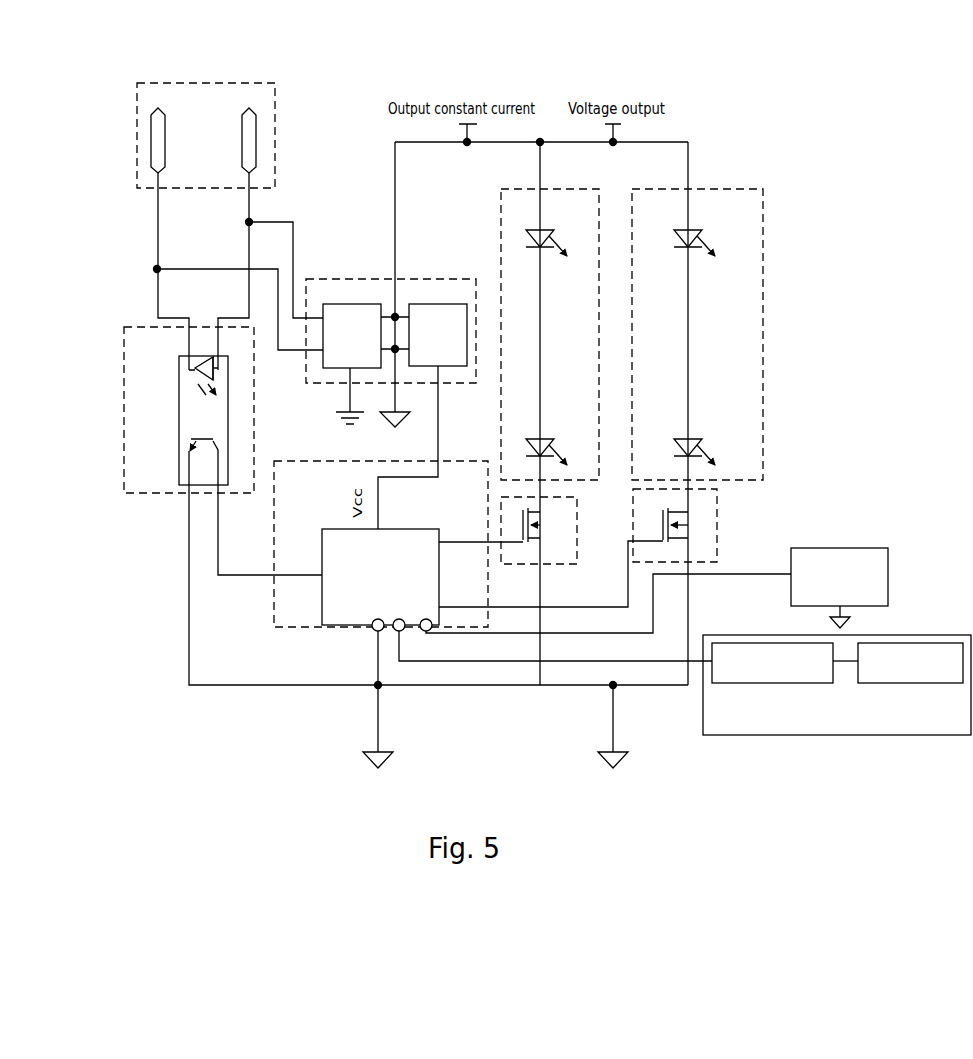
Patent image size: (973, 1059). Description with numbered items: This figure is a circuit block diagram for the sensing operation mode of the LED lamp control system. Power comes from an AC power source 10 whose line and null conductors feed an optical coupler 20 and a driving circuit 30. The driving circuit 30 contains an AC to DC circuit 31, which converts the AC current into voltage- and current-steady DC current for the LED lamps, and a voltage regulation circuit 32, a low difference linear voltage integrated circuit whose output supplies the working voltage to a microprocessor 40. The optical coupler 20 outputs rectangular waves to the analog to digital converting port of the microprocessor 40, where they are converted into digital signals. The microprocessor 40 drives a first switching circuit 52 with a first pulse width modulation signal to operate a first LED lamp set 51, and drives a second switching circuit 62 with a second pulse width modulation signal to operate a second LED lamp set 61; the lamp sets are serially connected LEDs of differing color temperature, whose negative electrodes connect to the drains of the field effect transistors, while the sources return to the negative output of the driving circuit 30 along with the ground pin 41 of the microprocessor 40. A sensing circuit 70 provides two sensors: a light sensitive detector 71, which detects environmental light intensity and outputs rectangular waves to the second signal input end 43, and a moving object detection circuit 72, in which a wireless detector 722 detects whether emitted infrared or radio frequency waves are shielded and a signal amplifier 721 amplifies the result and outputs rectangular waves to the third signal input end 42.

The power source 10 is at (208, 83).
The optical coupler 20 is at (391, 506).
The driving circuit 30 is at (391, 335).
The AC to DC circuit 31 is at (352, 364).
The voltage regulation (LDO) circuit 32 is at (422, 416).
The microprocessor 40 is at (518, 614).
The GND pin 41 is at (372, 632).
The third signal input end 42 is at (400, 633).
The second signal input end 43 is at (427, 633).
The first LED lamp set 51 is at (550, 413).
The first switching circuit 52 is at (555, 530).
The second LED lamp set 61 is at (697, 413).
The second switching circuit 62 is at (689, 525).
The sensing circuit 70 is at (837, 746).
The light sensitive detector 71 is at (840, 548).
The moving object detection circuit 72 is at (805, 710).
The signal amplifier 721 is at (772, 663).
The wireless detector 722 is at (910, 663).